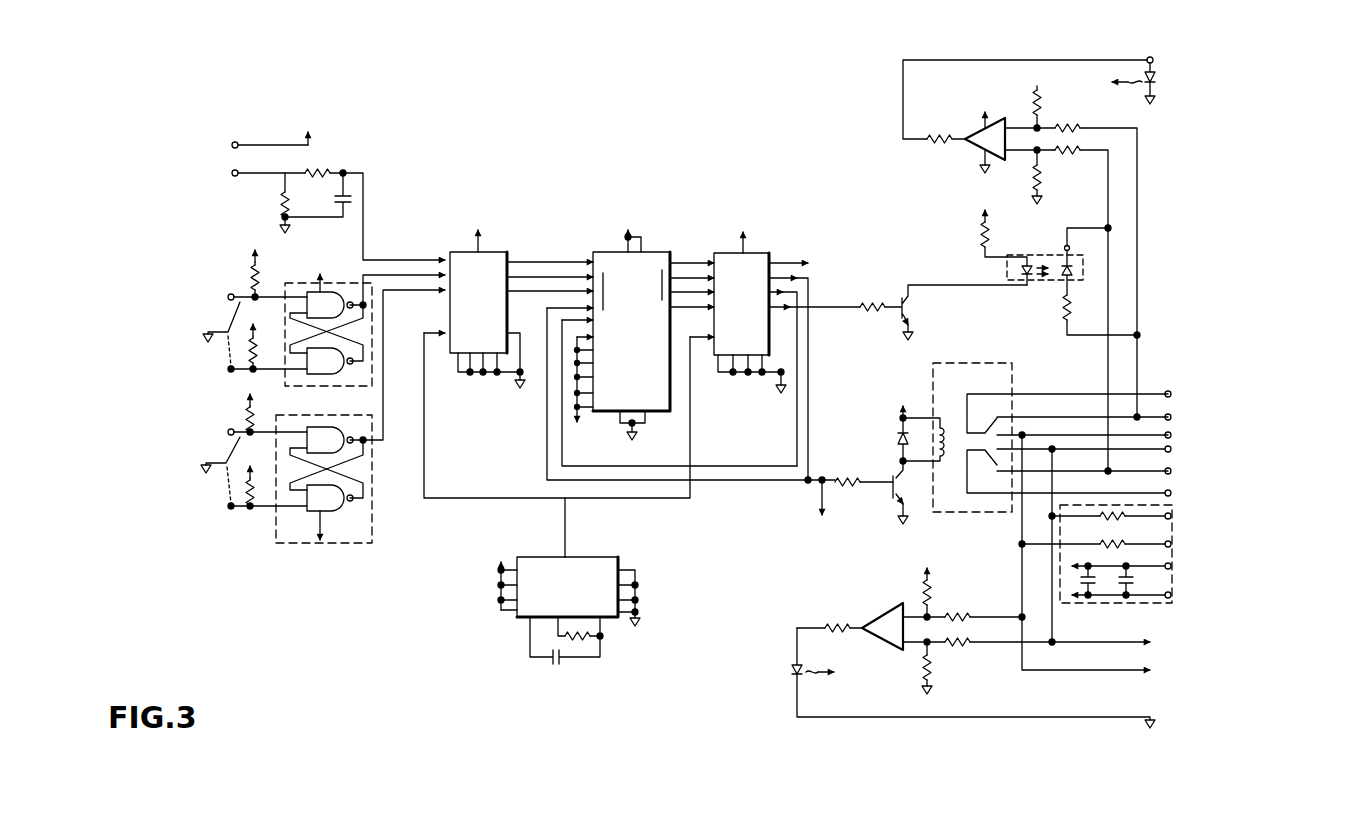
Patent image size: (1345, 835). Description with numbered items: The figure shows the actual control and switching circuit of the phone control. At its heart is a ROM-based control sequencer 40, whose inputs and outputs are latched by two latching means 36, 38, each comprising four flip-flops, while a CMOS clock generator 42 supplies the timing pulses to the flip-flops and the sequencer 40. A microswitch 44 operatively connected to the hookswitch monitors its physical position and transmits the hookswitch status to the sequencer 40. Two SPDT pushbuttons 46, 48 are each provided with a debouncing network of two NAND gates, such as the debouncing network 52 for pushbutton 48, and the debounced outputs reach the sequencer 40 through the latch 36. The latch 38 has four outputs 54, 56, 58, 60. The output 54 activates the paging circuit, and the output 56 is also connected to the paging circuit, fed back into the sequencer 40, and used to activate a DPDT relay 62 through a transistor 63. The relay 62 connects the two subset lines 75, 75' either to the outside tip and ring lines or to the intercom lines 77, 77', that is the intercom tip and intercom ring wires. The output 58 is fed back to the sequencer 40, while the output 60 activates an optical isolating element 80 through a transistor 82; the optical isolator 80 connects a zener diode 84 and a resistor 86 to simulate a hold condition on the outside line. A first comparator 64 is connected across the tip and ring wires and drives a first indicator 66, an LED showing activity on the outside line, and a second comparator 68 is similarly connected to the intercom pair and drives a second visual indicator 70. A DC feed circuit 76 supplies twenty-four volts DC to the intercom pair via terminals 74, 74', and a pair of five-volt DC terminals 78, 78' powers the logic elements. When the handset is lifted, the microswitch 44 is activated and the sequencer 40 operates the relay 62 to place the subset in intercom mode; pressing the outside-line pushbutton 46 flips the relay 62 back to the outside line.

The latching means 36 is at (480, 278).
The latching means 38 is at (748, 277).
The control sequencer 40 is at (640, 277).
The clock generator 42 is at (552, 596).
The microswitch 44 is at (236, 168).
The pushbutton 46 is at (313, 300).
The pushbutton 48 is at (313, 415).
The debouncing network 52 is at (330, 524).
The output 54 is at (784, 263).
The output 56 is at (797, 278).
The output 58 is at (800, 292).
The output 60 is at (800, 309).
The DPDT relay 62 is at (990, 380).
The transistor 63 is at (893, 481).
The first comparator 64 is at (985, 136).
The first indicator 66 is at (1155, 86).
The second comparator 68 is at (893, 628).
The second visual indicator 70 is at (795, 676).
The 24 VDC voltage terminal 74 is at (1188, 514).
The 24 VDC voltage terminal 74' is at (1178, 531).
The line L1 75 is at (1243, 390).
The line L2 75' is at (1247, 472).
The DC feed circuit 76 is at (1060, 567).
The intercom line 77 is at (1244, 414).
The intercom line 77' is at (1248, 442).
The 5 VDC voltage terminal 78 is at (1191, 570).
The 5 VDC voltage terminal 78' is at (1193, 609).
The optical isolating element 80 is at (1083, 266).
The transistor 82 is at (905, 296).
The zener diode 84 is at (1070, 242).
The resistor 86 is at (1075, 308).